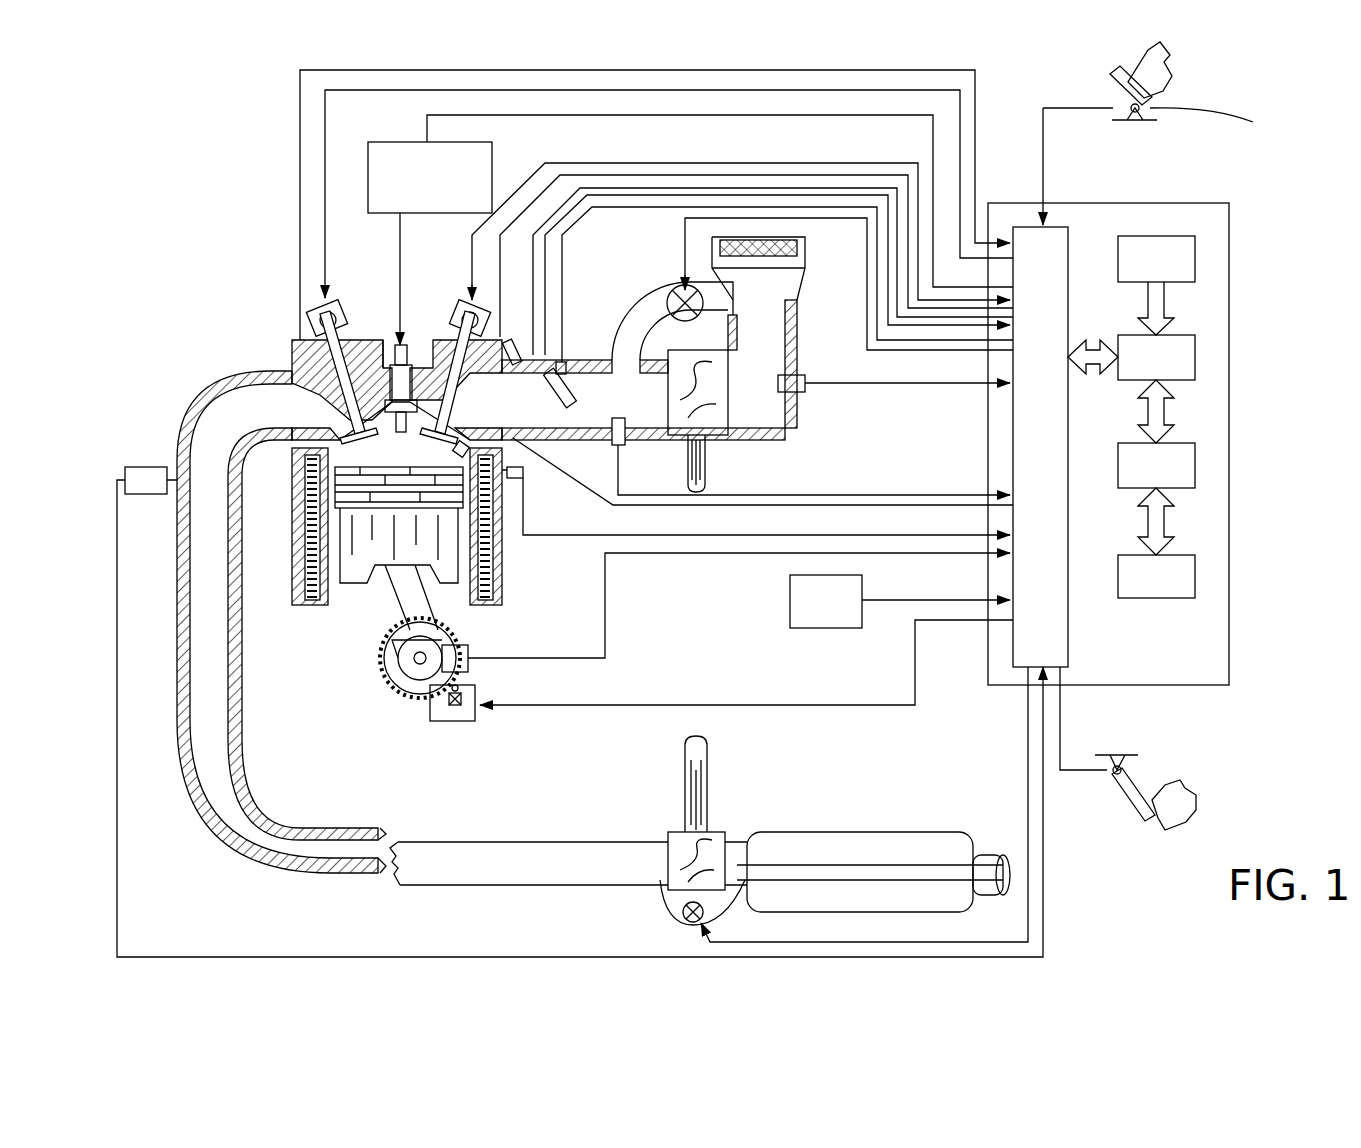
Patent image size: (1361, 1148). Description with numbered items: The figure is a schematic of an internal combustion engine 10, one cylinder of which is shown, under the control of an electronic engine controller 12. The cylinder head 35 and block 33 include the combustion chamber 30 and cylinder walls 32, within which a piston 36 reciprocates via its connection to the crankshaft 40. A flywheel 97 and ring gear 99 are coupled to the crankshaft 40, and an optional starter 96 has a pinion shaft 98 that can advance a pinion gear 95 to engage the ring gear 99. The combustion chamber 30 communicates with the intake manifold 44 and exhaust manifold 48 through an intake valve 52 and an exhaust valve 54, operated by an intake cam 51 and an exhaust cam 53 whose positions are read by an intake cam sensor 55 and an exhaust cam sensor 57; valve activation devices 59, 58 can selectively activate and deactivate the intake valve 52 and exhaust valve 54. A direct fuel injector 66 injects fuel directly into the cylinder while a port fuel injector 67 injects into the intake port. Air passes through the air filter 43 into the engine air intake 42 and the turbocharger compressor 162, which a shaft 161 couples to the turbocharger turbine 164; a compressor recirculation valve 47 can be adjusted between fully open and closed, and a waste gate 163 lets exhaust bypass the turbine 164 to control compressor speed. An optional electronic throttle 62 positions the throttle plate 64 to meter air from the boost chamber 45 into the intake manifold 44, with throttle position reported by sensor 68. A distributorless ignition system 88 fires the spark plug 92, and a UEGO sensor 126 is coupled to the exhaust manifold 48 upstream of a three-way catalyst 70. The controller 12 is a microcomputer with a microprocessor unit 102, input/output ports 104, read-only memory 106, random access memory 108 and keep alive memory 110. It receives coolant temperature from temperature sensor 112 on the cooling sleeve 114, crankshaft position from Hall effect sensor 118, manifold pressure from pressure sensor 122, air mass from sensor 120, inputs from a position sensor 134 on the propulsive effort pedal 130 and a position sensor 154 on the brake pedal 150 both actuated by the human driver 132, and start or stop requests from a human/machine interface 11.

The internal combustion engine 10 is at (224, 292).
The human/machine interface 11 is at (900, 601).
The electronic engine controller 12 is at (1232, 206).
The combustion chamber 30 is at (296, 556).
The cylinder walls 32 is at (342, 597).
The block 33 is at (288, 504).
The cylinder head 35 is at (290, 340).
The piston 36 is at (380, 550).
The crankshaft 40 is at (410, 680).
The engine air intake 42 is at (654, 276).
The air filter 43 is at (782, 258).
The intake manifold 44 is at (617, 347).
The boost chamber 45 is at (643, 415).
The compressor recirculation valve 47 is at (671, 300).
The exhaust manifold 48 is at (422, 628).
The intake cam 51 is at (470, 290).
The intake valve 52 is at (452, 426).
The exhaust cam 53 is at (328, 292).
The exhaust valve 54 is at (322, 405).
The intake cam sensor 55 is at (486, 330).
The exhaust cam sensor 57 is at (316, 322).
The valve activation device 58 is at (337, 318).
The valve activation device 59 is at (463, 320).
The electronic throttle 62 is at (568, 398).
The throttle plate 64 is at (612, 426).
The direct fuel injector 66 is at (508, 468).
The port fuel injector 67 is at (521, 341).
The throttle position sensor 68 is at (563, 372).
The three-way catalyst 70 is at (790, 832).
The distributorless ignition system 88 is at (494, 150).
The spark plug 92 is at (404, 344).
The pinion gear 95 is at (465, 720).
The starter 96 is at (476, 714).
The flywheel 97 is at (396, 656).
The pinion shaft 98 is at (450, 706).
The ring gear 99 is at (413, 696).
The microprocessor unit 102 is at (1196, 372).
The input/output ports 104 is at (1068, 242).
The read-only memory 106 is at (1196, 265).
The random access memory 108 is at (1196, 467).
The keep alive memory 110 is at (1196, 578).
The temperature sensor 112 is at (523, 490).
The cooling sleeve 114 is at (503, 548).
The Hall effect sensor 118 is at (470, 650).
The air mass sensor 120 is at (805, 383).
The pressure sensor 122 is at (612, 445).
The Universal Exhaust Gas Oxygen sensor 126 is at (125, 478).
The propulsive effort pedal 130 is at (1118, 80).
The human driver 132 is at (1175, 75).
The position sensor 134 is at (1224, 125).
The brake pedal 150 is at (1142, 818).
The position sensor 154 is at (1102, 764).
The shaft 161 is at (688, 470).
The turbocharger compressor 162 is at (712, 422).
The waste gate 163 is at (689, 918).
The turbocharger turbine 164 is at (668, 832).